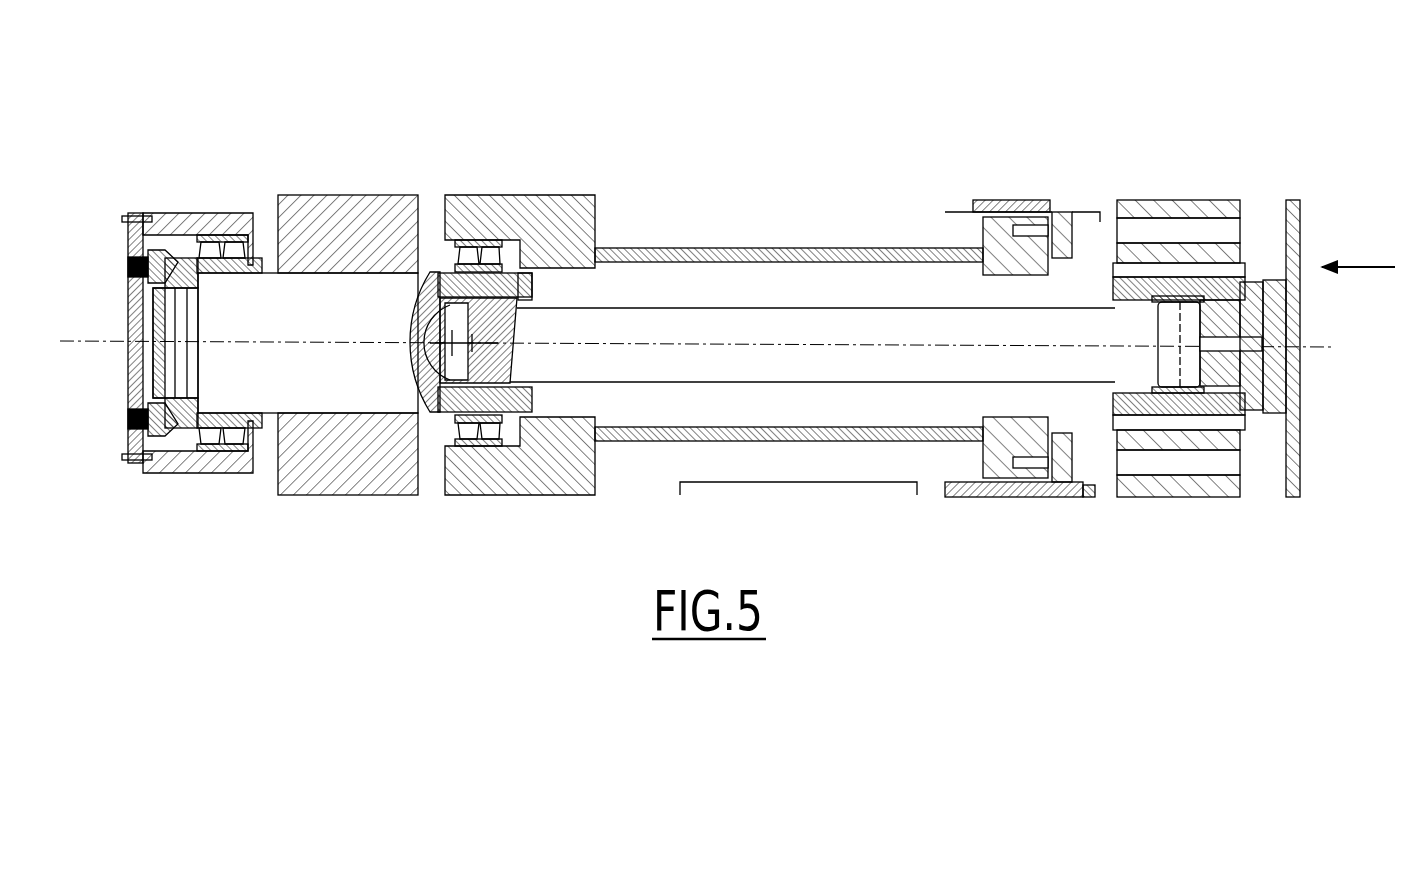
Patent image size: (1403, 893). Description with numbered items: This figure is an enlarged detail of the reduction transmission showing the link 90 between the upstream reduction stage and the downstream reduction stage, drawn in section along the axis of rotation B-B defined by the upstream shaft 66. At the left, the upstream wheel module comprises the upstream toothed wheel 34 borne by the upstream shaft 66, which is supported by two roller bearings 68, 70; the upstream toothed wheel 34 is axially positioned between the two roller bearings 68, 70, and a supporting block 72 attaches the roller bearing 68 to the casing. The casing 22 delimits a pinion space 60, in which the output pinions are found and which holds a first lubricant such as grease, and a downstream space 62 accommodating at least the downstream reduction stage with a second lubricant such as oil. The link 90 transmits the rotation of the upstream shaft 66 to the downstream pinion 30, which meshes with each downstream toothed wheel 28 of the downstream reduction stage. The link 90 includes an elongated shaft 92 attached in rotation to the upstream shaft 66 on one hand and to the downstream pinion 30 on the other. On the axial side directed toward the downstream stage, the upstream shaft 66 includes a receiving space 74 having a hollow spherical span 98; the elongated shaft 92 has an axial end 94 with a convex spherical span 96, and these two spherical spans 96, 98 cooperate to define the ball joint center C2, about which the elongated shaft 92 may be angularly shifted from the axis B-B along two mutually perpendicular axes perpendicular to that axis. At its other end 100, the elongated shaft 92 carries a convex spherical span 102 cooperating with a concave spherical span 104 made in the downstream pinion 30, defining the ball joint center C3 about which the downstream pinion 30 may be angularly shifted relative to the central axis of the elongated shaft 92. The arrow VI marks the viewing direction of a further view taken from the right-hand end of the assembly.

The casing 22 is at (502, 493).
The downstream toothed wheel 28 is at (1152, 262).
The downstream pinion 30 is at (1125, 405).
The upstream toothed wheel 34 is at (348, 197).
The pinion space 60 is at (798, 345).
The downstream space 62 is at (1088, 245).
The upstream shaft 66 is at (270, 400).
The roller bearing 68 is at (238, 197).
The roller bearing 70 is at (400, 212).
The supporting block 72 is at (198, 197).
The receiving space 74 is at (540, 300).
The link 90 is at (690, 285).
The elongated shaft 92 is at (847, 330).
The axial end 94 is at (500, 305).
The convex spherical span 96 is at (480, 280).
The hollow spherical span 98 is at (492, 377).
The end 100 is at (1163, 393).
The convex spherical span 102 is at (1185, 294).
The concave spherical span 104 is at (1247, 412).
The axis of rotation B- B is at (700, 323).
The ball joint center C2 is at (495, 343).
The ball joint center C3 is at (1184, 324).
The view direction VI is at (1358, 235).